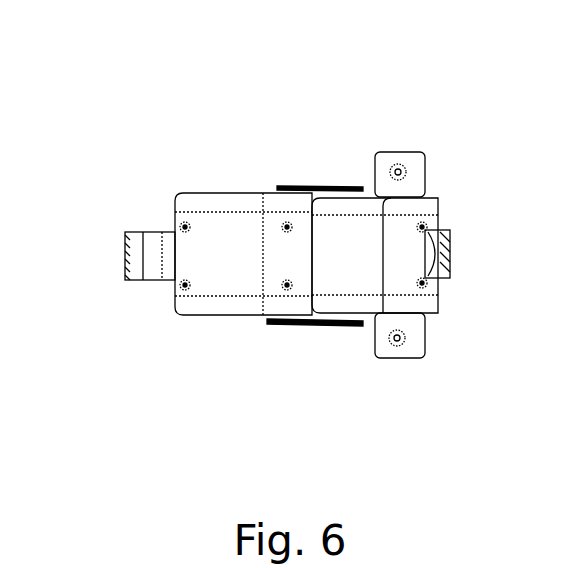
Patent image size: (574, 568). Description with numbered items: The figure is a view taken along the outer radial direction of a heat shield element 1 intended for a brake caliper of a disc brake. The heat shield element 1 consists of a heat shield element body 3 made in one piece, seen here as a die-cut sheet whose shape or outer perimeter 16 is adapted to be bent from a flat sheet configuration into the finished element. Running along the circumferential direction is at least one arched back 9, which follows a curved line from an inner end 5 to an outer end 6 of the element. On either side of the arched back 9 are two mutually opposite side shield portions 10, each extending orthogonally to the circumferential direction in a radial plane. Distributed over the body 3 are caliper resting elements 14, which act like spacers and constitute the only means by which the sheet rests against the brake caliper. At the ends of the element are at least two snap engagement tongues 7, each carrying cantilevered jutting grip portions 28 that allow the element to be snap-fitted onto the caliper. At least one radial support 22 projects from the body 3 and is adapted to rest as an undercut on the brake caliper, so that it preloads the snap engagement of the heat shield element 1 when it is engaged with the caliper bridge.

The heat shield element 1 is at (459, 88).
The heat shield element body 3 is at (203, 193).
The inner end 5 is at (447, 227).
The outer end 6 is at (177, 298).
The snap engagement tongue 7 is at (150, 230).
The arched back 9 is at (345, 250).
The side shield portion 10 is at (304, 240).
The caliper resting element 14 is at (403, 172).
The outer perimeter 16 is at (378, 150).
The radial support 22 is at (413, 148).
The cantilevered jutting grip portion 28 is at (123, 260).